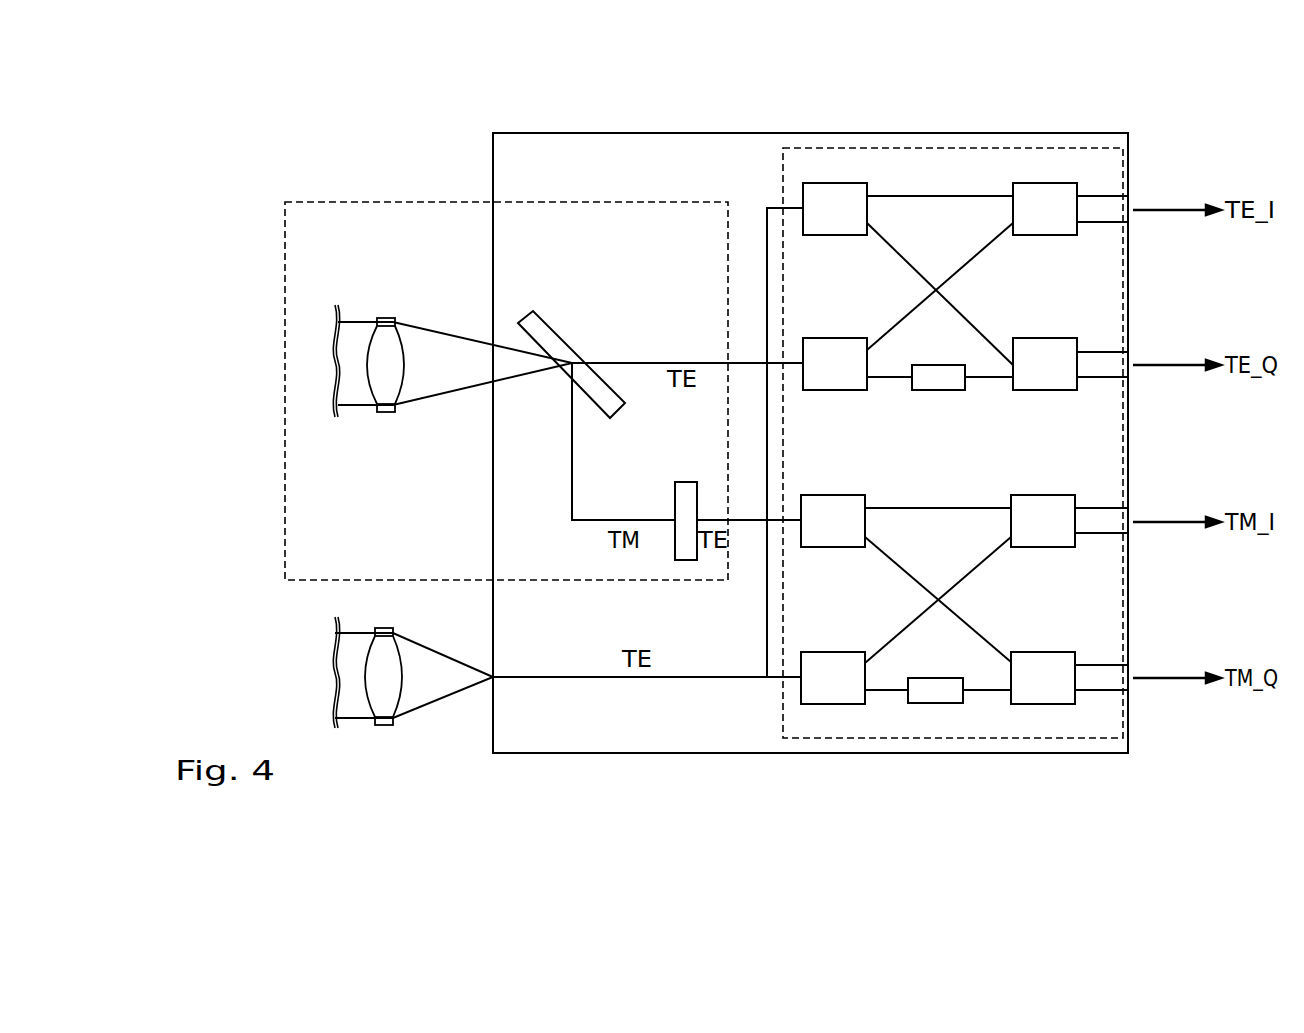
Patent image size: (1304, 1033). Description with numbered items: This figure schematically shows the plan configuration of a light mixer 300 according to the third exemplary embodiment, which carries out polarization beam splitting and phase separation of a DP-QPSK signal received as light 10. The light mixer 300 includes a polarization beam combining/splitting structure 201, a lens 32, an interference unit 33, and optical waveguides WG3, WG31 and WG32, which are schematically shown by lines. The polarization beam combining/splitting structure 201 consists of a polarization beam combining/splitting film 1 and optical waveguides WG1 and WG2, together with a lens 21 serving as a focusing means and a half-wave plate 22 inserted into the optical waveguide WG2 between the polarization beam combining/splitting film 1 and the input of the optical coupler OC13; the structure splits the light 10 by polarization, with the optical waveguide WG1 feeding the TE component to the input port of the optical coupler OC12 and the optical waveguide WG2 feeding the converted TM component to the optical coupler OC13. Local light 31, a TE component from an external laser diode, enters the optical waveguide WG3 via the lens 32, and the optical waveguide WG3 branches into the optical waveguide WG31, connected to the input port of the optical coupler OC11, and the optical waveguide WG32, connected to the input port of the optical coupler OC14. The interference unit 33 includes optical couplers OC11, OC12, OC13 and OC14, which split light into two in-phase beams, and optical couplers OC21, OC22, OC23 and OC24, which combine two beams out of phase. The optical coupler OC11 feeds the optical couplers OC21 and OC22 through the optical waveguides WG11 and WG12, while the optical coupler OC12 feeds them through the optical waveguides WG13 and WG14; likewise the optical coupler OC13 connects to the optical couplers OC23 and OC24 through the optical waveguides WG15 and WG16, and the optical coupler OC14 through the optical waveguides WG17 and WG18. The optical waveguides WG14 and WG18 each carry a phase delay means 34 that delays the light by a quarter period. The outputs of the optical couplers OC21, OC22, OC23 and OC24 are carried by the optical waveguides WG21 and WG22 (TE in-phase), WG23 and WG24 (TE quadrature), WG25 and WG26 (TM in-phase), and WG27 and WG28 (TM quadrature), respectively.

The light mixer 300 is at (752, 53).
The polarization beam combining/splitting structure 201 is at (397, 202).
The lens 21 is at (387, 318).
The light 10 is at (420, 401).
The polarization beam combining/splitting film 1 is at (550, 322).
The half-wave plate 22 is at (685, 482).
The local light 31 is at (453, 694).
The lens 32 is at (380, 727).
The interference unit 33 is at (998, 148).
The phase delay means 34 is at (932, 365).
The optical waveguide WG1 is at (675, 360).
The optical waveguide WG2 is at (568, 470).
The optical waveguide WG3 is at (547, 675).
The optical waveguide WG31 is at (766, 606).
The optical waveguide WG32 is at (765, 682).
The optical waveguide WG11 is at (892, 194).
The optical waveguide WG12 is at (895, 250).
The optical waveguide WG13 is at (993, 241).
The optical waveguide WG14 is at (988, 378).
The optical waveguide WG15 is at (892, 506).
The optical waveguide WG16 is at (893, 563).
The optical waveguide WG17 is at (993, 550).
The optical waveguide WG18 is at (987, 691).
The optical waveguide WG21 is at (1108, 192).
The optical waveguide WG22 is at (1108, 225).
The optical waveguide WG23 is at (1108, 350).
The optical waveguide WG24 is at (1108, 380).
The optical waveguide WG25 is at (1108, 505).
The optical waveguide WG26 is at (1108, 537).
The optical waveguide WG27 is at (1108, 662).
The optical waveguide WG28 is at (1108, 693).
The optical coupler OC11 is at (812, 237).
The optical coupler OC12 is at (807, 392).
The optical coupler OC13 is at (847, 495).
The optical coupler OC14 is at (808, 650).
The optical coupler OC21 is at (1073, 237).
The optical coupler OC22 is at (1058, 392).
The optical coupler OC23 is at (1037, 495).
The optical coupler OC24 is at (1058, 650).